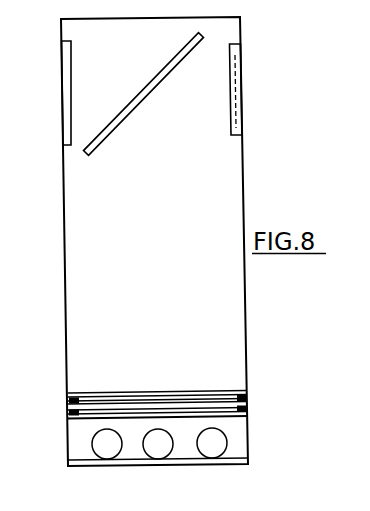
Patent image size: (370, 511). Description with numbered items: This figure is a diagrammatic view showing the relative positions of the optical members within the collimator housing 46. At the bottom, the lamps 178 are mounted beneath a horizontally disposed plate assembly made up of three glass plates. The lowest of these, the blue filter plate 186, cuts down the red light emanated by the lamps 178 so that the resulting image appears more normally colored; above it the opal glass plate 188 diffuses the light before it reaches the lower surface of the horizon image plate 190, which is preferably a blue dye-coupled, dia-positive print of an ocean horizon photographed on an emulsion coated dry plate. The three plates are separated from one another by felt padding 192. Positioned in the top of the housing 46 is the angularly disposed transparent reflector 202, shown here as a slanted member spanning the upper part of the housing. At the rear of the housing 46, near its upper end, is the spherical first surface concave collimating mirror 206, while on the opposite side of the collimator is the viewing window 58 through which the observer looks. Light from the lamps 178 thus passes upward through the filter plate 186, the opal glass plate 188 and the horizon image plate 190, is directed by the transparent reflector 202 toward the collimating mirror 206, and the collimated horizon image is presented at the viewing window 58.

The housing 46 is at (250, 177).
The viewing window 58 is at (65, 89).
The spherical first surface concave collimating mirror 206 is at (236, 72).
The transparent reflector 202 is at (150, 90).
The horizon image plate 190 is at (170, 393).
The opal glass plate 188 is at (110, 406).
The blue filter plate 186 is at (232, 415).
The felt padding 192 is at (69, 399).
The lamps 178 is at (205, 450).